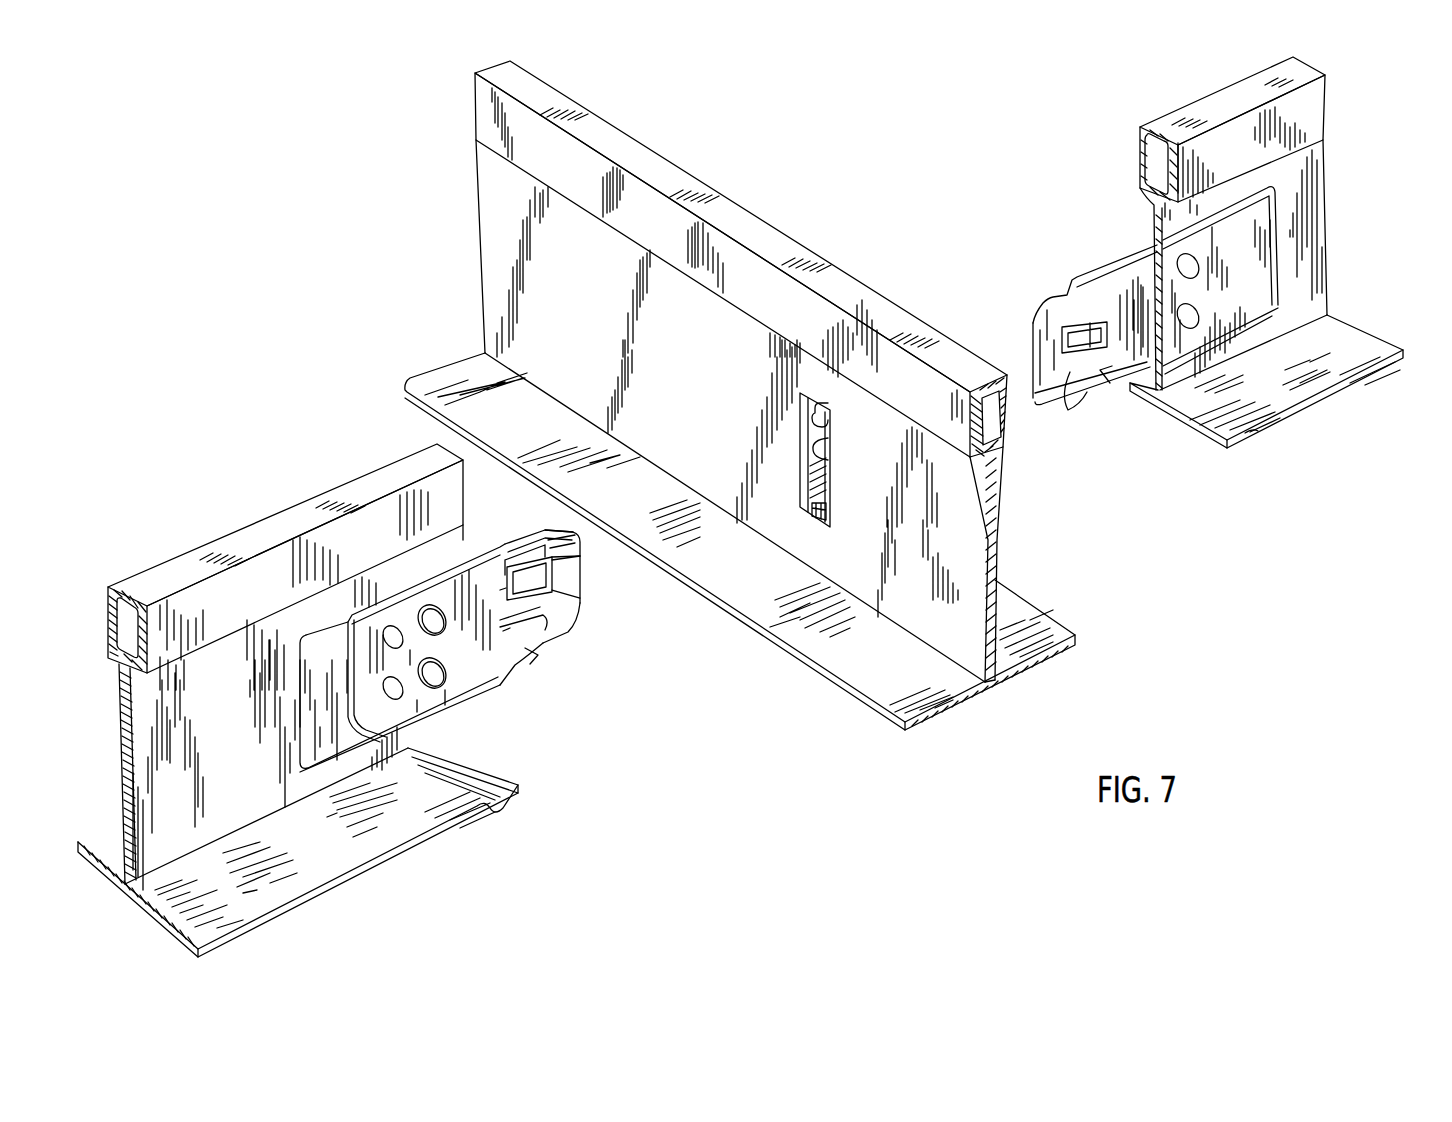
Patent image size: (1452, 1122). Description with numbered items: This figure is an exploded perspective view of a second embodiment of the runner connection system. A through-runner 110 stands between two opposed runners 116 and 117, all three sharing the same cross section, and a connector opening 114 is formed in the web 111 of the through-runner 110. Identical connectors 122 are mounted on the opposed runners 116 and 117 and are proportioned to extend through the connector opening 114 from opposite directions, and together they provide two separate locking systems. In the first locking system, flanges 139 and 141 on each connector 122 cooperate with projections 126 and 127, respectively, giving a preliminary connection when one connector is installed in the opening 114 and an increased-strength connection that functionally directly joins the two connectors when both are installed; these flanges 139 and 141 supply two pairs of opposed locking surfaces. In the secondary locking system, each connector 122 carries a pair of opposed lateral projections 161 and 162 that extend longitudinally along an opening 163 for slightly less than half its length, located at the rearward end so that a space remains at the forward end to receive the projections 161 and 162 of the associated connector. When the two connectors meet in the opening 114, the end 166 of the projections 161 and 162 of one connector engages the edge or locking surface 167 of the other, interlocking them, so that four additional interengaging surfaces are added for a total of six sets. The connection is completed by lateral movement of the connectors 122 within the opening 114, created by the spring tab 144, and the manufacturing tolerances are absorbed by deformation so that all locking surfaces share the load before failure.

The through-runner 110 is at (740, 395).
The web 111 is at (990, 525).
The connector opening 114 is at (838, 460).
The opposed runner 116 is at (288, 507).
The opposed runner 117 is at (1178, 104).
The connector 122 is at (728, 508).
The projection 126 is at (829, 421).
The projection 127 is at (827, 511).
The flange 139 is at (533, 542).
The flange 141 is at (538, 654).
The spring tab 144 is at (540, 583).
The lateral projection 161 is at (510, 577).
The lateral projection 162 is at (533, 620).
The opening 163 is at (582, 598).
The end 166 is at (500, 590).
The locking surface 167 is at (560, 553).